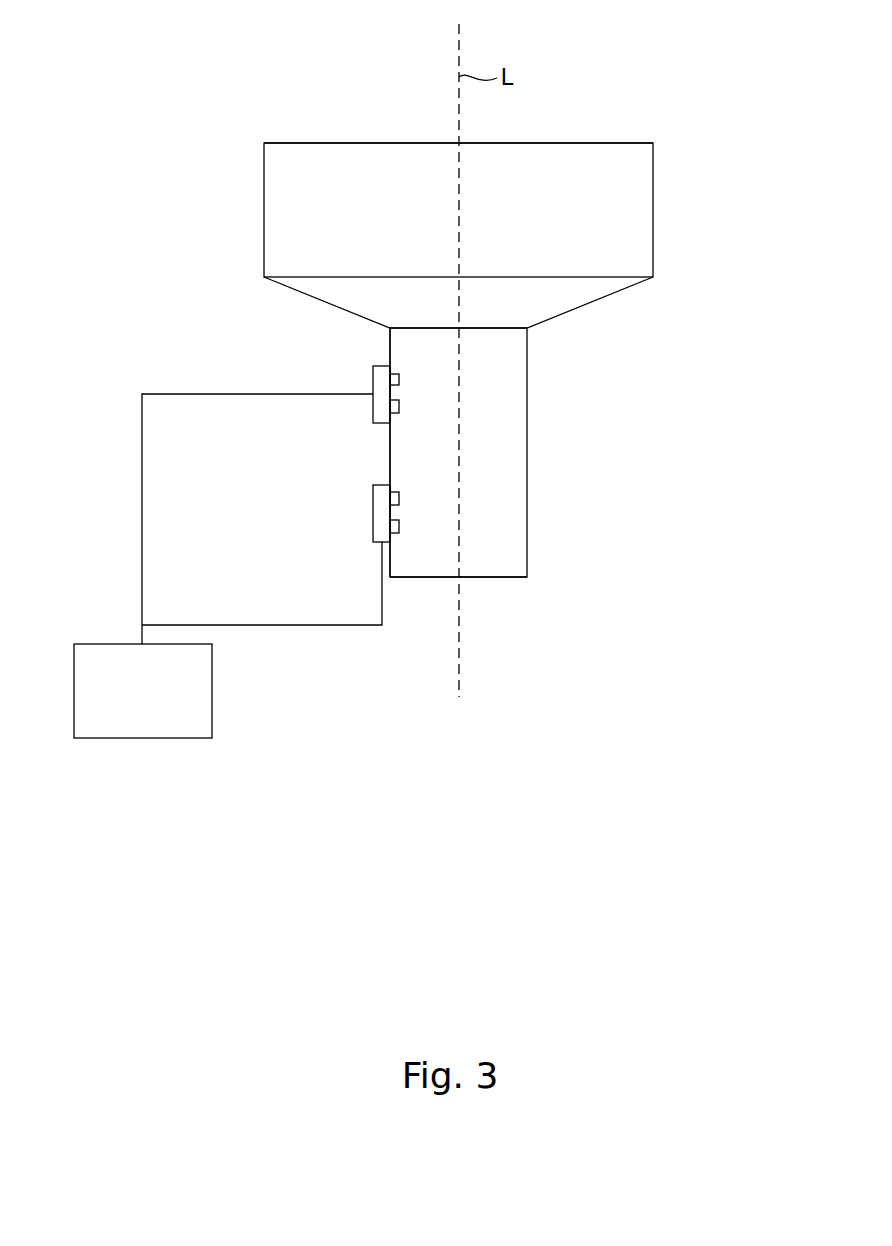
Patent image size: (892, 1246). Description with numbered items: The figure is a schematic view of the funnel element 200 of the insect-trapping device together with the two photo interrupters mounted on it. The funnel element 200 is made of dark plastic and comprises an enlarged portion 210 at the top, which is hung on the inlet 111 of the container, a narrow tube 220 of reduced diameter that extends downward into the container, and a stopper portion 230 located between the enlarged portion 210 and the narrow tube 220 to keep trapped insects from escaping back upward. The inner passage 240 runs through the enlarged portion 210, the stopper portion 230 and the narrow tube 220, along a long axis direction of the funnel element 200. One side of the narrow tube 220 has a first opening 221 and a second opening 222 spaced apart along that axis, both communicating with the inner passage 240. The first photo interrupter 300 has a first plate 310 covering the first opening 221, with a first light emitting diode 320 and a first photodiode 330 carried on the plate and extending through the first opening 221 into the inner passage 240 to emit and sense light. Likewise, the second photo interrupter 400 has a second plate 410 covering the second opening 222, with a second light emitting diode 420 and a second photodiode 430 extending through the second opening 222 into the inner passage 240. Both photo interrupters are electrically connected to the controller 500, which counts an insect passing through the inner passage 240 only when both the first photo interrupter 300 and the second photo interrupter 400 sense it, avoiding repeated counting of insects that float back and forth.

The inlet 111 is at (332, 142).
The funnel element 200 is at (531, 326).
The enlarged portion 210 is at (638, 262).
The narrow tube 220 is at (518, 447).
The first opening 221 is at (391, 423).
The second opening 222 is at (391, 485).
The stopper portion 230 is at (515, 327).
The inner passage 240 is at (508, 577).
The first photo interrupter 300 is at (284, 356).
The first plate 310 is at (380, 388).
The first light emitting diode 320 is at (393, 378).
The first photodiode 330 is at (393, 407).
The second photo interrupter 400 is at (284, 551).
The second plate 410 is at (380, 518).
The second light emitting diode 420 is at (375, 493).
The second photodiode 430 is at (393, 528).
The controller 500 is at (142, 738).